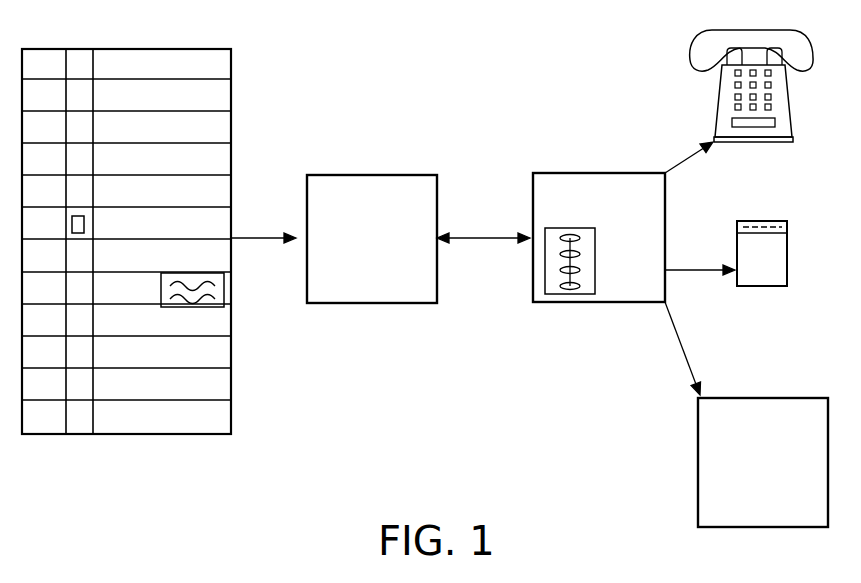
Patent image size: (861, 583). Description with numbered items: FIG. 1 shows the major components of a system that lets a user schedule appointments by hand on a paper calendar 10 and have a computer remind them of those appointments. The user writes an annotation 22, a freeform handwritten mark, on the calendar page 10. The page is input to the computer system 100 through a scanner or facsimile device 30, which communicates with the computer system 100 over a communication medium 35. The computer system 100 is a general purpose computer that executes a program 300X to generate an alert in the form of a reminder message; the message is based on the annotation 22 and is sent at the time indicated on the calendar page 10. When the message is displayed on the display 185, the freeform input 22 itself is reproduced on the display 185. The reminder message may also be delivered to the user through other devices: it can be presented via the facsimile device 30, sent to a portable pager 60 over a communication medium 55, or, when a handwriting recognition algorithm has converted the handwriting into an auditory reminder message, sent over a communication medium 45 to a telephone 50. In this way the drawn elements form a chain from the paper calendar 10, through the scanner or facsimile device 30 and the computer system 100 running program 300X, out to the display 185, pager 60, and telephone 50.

The paper calendar 10 is at (193, 49).
The annotation 22 is at (253, 238).
The facsimile device 30 is at (345, 175).
The communication medium 35 is at (475, 238).
The computer system 100 is at (584, 173).
The program 300X is at (595, 268).
The communication medium 45 is at (687, 160).
The telephone 50 is at (757, 142).
The communication medium 55 is at (690, 270).
The portable pager 60 is at (760, 286).
The display 185 is at (783, 398).